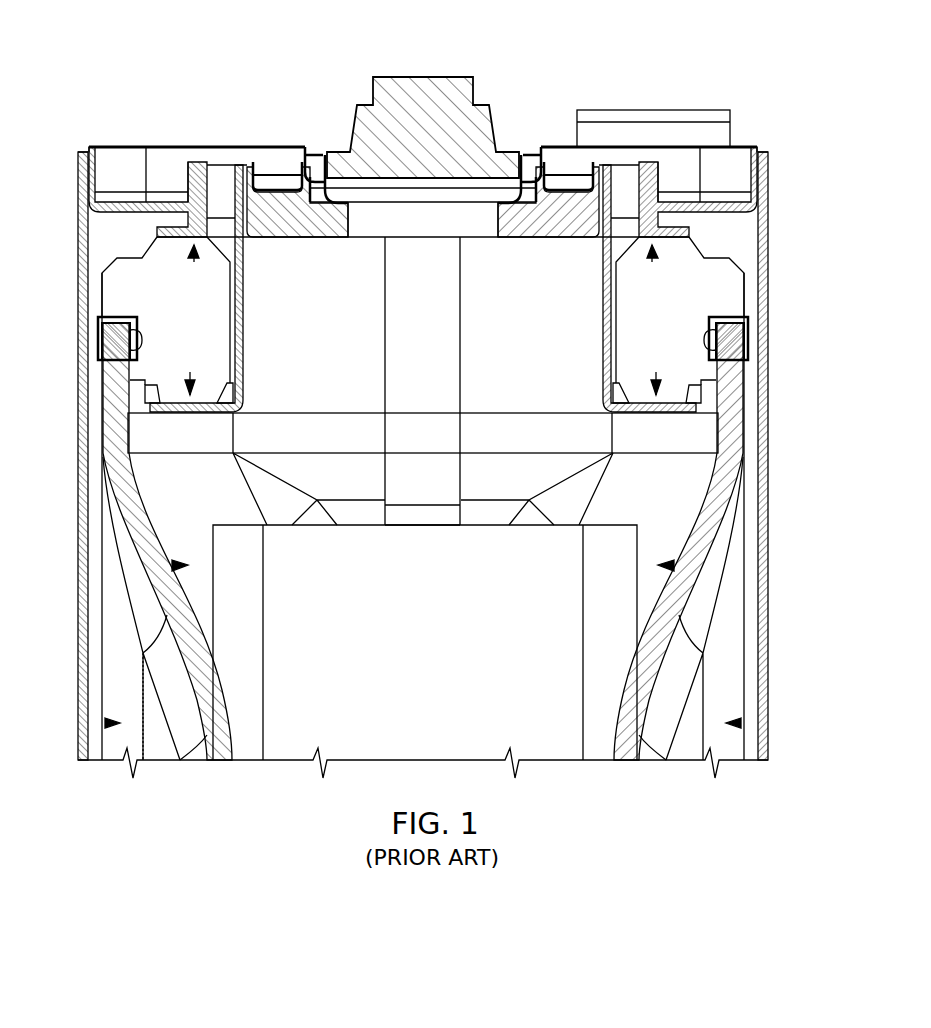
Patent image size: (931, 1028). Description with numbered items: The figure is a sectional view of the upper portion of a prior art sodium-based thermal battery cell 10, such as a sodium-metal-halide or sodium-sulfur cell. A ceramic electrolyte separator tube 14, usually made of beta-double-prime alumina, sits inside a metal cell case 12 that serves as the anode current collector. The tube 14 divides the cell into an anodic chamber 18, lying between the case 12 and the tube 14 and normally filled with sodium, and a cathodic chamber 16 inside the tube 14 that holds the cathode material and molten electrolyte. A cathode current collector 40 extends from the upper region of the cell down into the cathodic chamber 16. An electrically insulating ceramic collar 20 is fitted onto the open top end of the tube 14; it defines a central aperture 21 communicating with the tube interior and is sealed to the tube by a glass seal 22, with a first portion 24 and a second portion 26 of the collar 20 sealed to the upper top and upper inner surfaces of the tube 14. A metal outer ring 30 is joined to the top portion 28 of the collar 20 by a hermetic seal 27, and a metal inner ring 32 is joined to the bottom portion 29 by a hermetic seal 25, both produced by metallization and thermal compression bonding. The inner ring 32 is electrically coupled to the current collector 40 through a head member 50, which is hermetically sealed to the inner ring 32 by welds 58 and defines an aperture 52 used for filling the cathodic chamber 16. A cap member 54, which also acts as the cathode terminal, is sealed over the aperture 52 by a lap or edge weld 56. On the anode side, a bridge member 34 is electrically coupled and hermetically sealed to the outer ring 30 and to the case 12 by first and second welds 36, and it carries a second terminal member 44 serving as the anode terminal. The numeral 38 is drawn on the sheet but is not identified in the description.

The sodium-based thermal battery cell 10 is at (103, 48).
The metal cell case 12 is at (78, 172).
The electrolyte separator tube 14 is at (125, 500).
The cathodic chamber 16 is at (175, 566).
The anodic chamber 18 is at (108, 723).
The electrically insulating collar 20 is at (118, 292).
The central aperture 21 is at (232, 330).
The glass seal 22 is at (112, 333).
The first portion 24 is at (98, 318).
The hermetic seal 25 is at (128, 430).
The second portion 26 is at (140, 345).
The hermetic seal 27 is at (110, 245).
The top portion 28 is at (194, 260).
The bottom portion 29 is at (190, 374).
The metal outer ring 30 is at (200, 160).
The metal inner ring 32 is at (195, 165).
The bridge member 34 is at (137, 198).
The welds 36 is at (183, 180).
The outer ring 38 is at (85, 150).
The cathode current collector 40 is at (405, 337).
The second terminal member 44 is at (722, 112).
The head member 50 is at (278, 182).
The aperture 52 is at (415, 212).
The cap member 54 is at (443, 78).
The weld 56 is at (312, 175).
The welds 58 is at (252, 200).